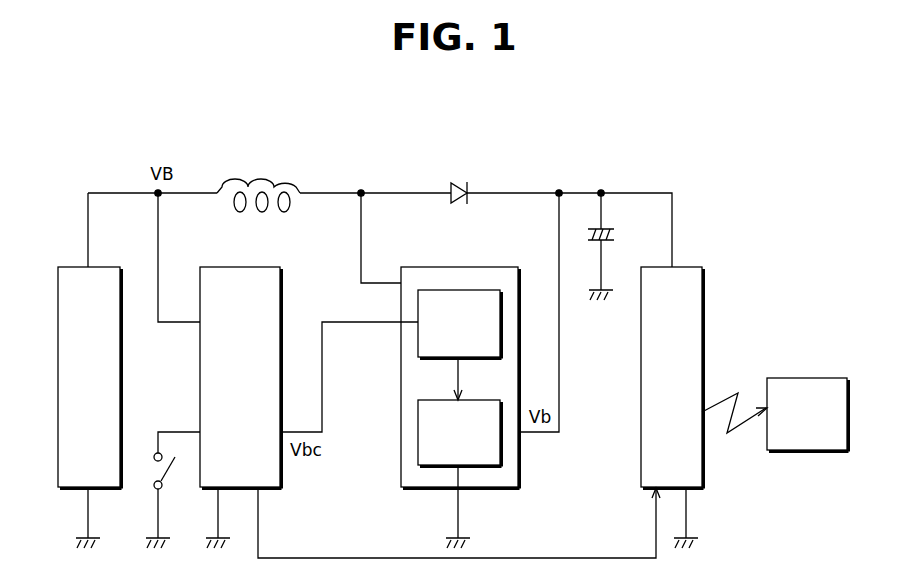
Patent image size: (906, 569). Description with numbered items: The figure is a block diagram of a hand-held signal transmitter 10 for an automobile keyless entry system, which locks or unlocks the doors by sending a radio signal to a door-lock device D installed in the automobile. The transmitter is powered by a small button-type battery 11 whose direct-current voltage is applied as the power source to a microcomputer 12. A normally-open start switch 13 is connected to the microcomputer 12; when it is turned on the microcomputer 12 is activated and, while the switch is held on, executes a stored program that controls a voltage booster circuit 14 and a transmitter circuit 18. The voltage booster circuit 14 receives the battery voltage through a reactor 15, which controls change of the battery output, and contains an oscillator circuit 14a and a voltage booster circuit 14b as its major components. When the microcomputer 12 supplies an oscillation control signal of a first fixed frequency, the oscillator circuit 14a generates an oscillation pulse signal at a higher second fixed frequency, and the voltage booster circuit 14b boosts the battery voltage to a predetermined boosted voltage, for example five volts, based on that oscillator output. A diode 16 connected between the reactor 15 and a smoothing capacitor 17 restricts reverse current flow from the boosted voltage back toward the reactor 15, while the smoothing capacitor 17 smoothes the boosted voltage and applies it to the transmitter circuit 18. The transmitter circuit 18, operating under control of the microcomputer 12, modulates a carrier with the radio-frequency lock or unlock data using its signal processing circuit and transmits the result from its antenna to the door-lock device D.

The signal transmitter 10 is at (623, 180).
The battery 11 is at (109, 267).
The microcomputer 12 is at (264, 267).
The start switch 13 is at (150, 476).
The voltage booster circuit 14 is at (518, 459).
The oscillator circuit 14a is at (480, 290).
The voltage booster circuit 14b is at (490, 468).
The reactor 15 is at (270, 185).
The diode 16 is at (455, 185).
The smoothing capacitor 17 is at (613, 223).
The transmitter circuit 18 is at (692, 267).
The door-lock device D is at (805, 378).